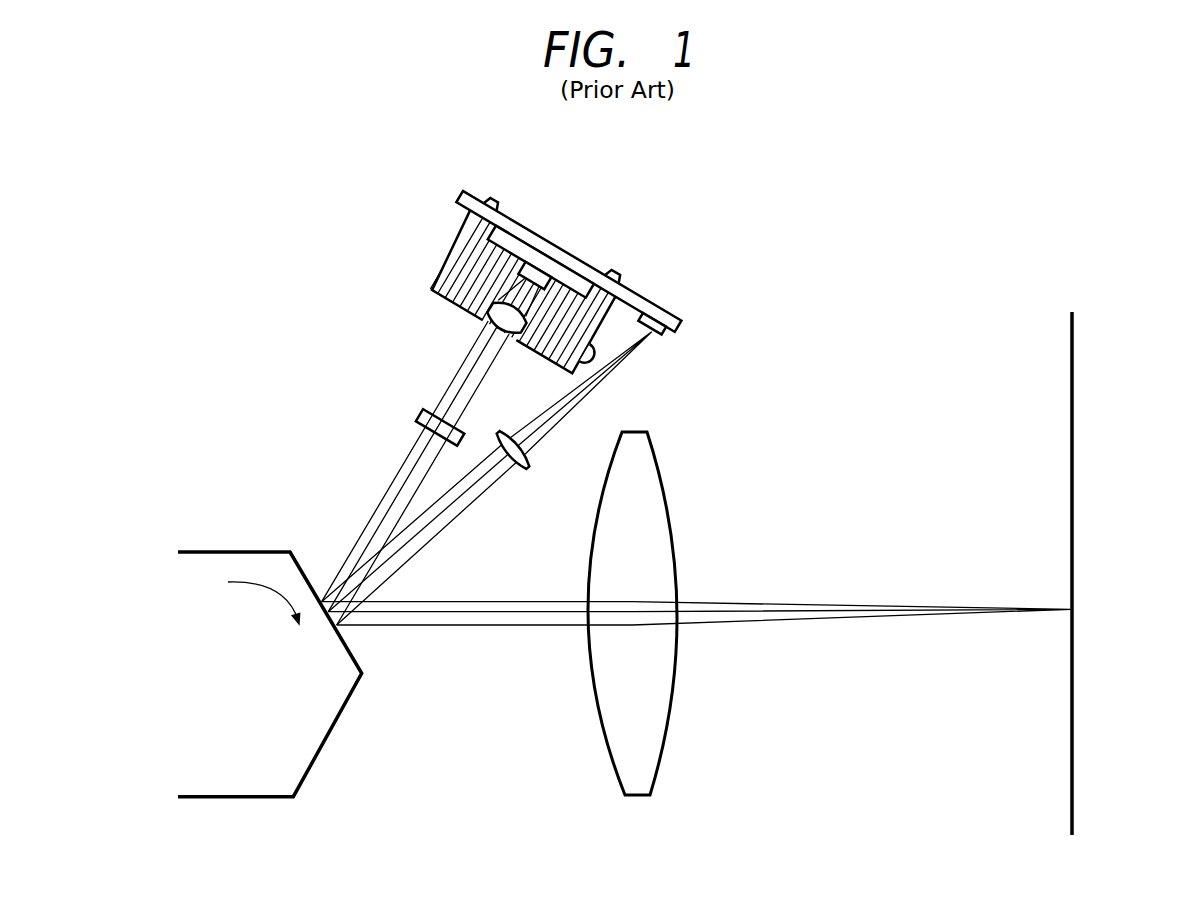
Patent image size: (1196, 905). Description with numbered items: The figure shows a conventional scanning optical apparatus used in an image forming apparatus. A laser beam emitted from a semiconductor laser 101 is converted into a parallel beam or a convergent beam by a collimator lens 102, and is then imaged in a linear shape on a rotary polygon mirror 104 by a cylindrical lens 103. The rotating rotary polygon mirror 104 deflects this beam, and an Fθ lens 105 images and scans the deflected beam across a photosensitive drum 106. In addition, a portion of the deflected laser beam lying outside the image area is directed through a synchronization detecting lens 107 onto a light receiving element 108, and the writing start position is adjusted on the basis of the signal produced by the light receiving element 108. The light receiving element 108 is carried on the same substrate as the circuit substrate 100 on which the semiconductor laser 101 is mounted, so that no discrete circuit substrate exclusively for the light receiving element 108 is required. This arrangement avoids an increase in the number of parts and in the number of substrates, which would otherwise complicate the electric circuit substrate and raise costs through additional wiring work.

The circuit substrate 100 is at (640, 293).
The semiconductor laser 101 is at (527, 270).
The collimator lens 102 is at (482, 322).
The cylindrical lens 103 is at (412, 419).
The rotary polygon mirror 104 is at (297, 575).
The Fθ lens 105 is at (667, 490).
The photosensitive drum 106 is at (1075, 447).
The synchronization detecting lens 107 is at (531, 470).
The light receiving element 108 is at (658, 336).